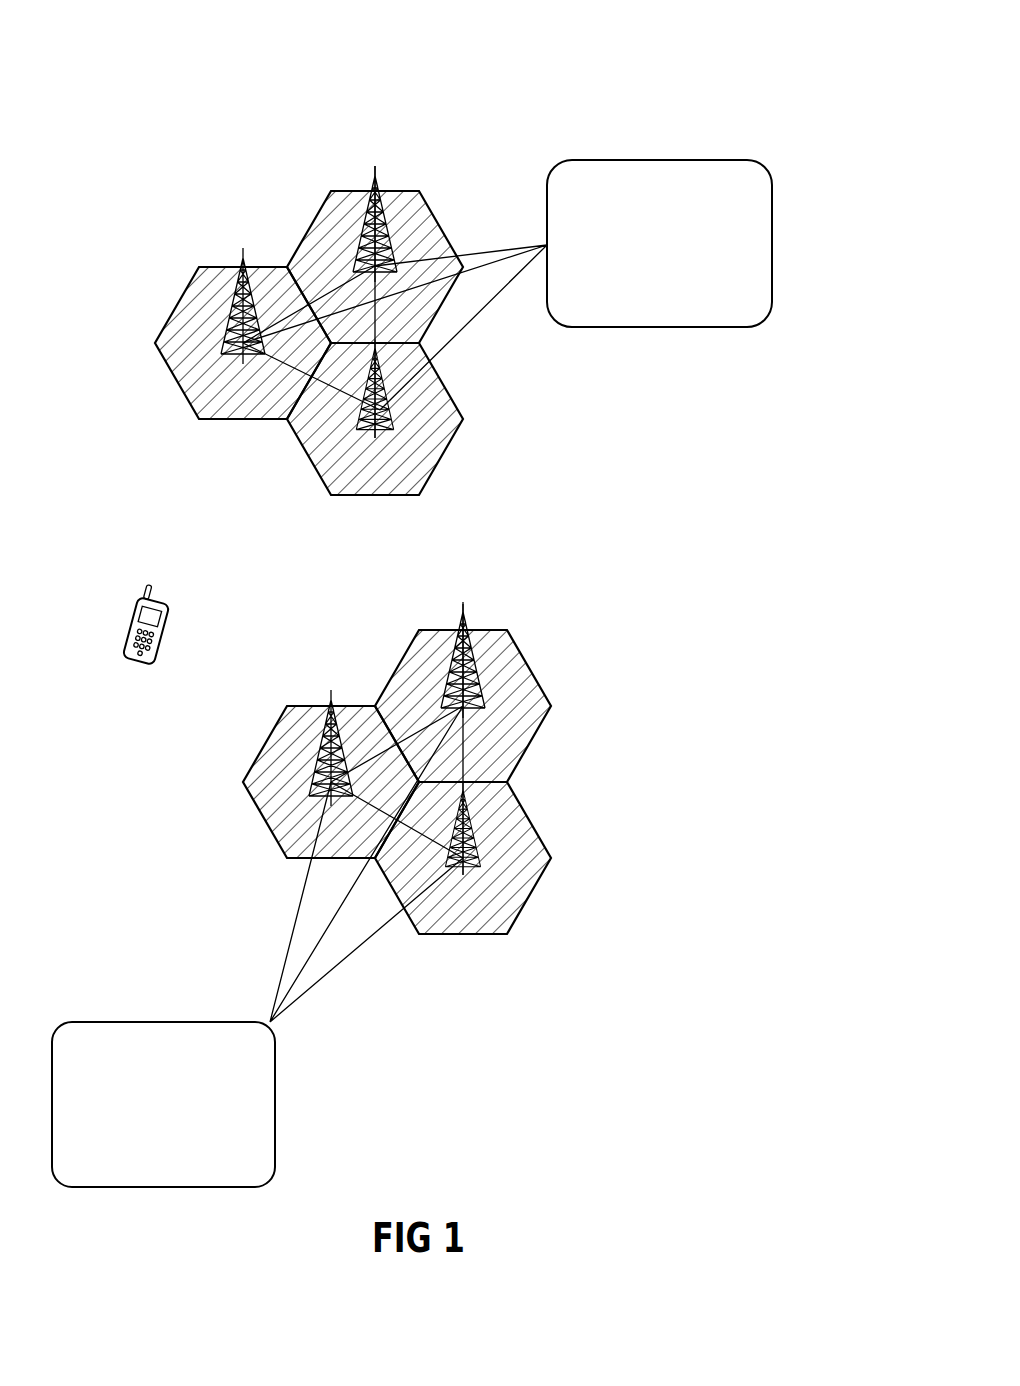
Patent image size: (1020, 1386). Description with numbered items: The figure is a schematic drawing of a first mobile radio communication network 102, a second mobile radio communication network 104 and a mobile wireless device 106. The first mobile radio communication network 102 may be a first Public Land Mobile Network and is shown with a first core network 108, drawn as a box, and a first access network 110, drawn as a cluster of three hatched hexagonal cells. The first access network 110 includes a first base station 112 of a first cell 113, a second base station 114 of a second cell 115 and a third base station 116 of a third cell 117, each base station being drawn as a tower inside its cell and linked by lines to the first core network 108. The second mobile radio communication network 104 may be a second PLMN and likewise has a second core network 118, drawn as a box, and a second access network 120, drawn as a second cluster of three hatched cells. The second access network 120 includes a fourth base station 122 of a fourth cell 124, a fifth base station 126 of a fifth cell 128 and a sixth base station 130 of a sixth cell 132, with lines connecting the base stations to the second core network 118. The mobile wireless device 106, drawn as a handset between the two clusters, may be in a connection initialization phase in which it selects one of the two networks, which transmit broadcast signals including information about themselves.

The first mobile radio communication network 102 is at (500, 64).
The second mobile radio communication network 104 is at (740, 1075).
The mobile wireless device 106 is at (126, 620).
The first core network 108 is at (774, 283).
The first access network 110 is at (251, 158).
The first base station 112 is at (237, 305).
The first cell 113 is at (197, 378).
The second base station 114 is at (380, 193).
The second cell 115 is at (343, 200).
The third base station 116 is at (385, 412).
The third cell 117 is at (333, 483).
The second core network 118 is at (276, 1105).
The second access network 120 is at (637, 757).
The fourth base station 122 is at (320, 768).
The fourth cell 124 is at (270, 807).
The fifth base station 126 is at (480, 670).
The fifth cell 128 is at (493, 632).
The sixth base station 130 is at (480, 840).
The sixth cell 132 is at (505, 897).